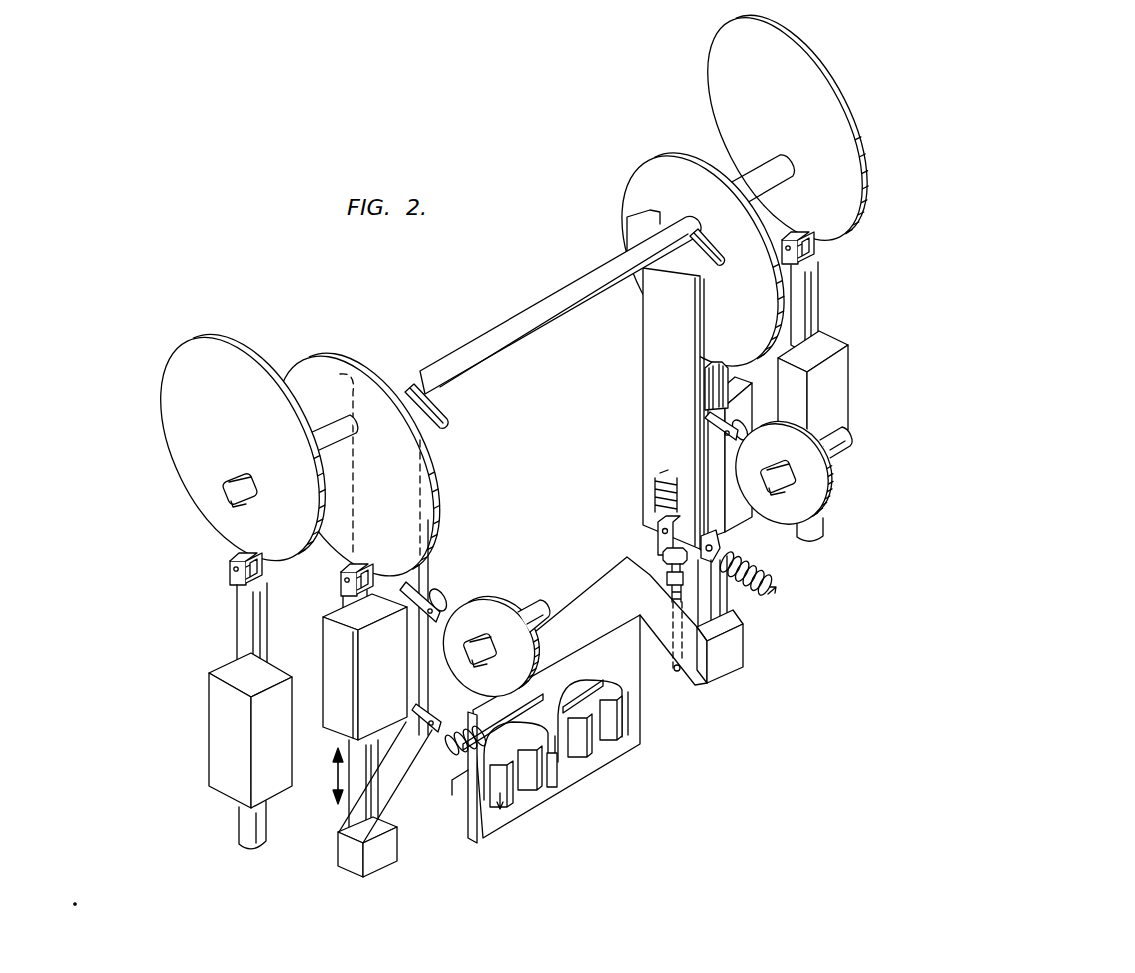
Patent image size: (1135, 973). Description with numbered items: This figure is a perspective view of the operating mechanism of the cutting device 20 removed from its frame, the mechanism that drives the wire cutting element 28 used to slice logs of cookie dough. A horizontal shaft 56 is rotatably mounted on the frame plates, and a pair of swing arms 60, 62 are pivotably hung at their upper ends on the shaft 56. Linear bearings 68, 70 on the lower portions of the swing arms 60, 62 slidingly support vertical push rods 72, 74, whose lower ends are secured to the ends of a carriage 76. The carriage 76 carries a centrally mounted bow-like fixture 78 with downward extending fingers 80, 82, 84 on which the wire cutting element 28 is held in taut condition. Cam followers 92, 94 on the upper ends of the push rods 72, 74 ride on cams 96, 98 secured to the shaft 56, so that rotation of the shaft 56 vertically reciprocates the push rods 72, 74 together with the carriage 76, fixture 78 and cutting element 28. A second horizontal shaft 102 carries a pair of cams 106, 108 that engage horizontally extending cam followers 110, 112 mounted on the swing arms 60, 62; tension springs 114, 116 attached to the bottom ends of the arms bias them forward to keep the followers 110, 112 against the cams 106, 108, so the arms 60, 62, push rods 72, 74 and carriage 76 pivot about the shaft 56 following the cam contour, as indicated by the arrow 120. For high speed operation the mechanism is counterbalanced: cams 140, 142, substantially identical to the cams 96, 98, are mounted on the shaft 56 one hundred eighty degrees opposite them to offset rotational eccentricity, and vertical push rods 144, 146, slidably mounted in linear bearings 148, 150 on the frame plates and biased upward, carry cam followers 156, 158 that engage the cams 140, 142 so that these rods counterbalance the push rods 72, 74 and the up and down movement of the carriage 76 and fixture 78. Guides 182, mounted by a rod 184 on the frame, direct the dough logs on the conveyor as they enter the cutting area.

The cutting device 20 is at (198, 302).
The wire cutting element 28 is at (590, 770).
The horizontal shaft 56 is at (485, 333).
The swing arm 60 is at (416, 572).
The swing arm 62 is at (655, 350).
The linear bearing 68 is at (335, 640).
The linear bearing 70 is at (733, 510).
The vertical push rod 72 is at (352, 805).
The vertical push rod 74 is at (728, 618).
The carriage 76 is at (600, 590).
The bow-like fixture 78 is at (647, 678).
The finger 80 is at (478, 838).
The finger 82 is at (570, 783).
The finger 84 is at (645, 728).
The cam follower 92 is at (342, 582).
The cam follower 94 is at (705, 388).
The cam 96 is at (335, 370).
The cam 98 is at (688, 150).
The horizontal shaft 102 is at (525, 612).
The cam 106 is at (500, 688).
The cam 108 is at (815, 490).
The cam follower 110 is at (440, 596).
The cam follower 112 is at (706, 428).
The tension spring 114 is at (456, 748).
The tension spring 116 is at (772, 578).
The arrow 120 is at (368, 913).
The cam 140 is at (178, 455).
The cam 142 is at (820, 100).
The vertical push rod 144 is at (237, 625).
The vertical push rod 146 is at (820, 312).
The linear bearing 148 is at (214, 705).
The linear bearing 150 is at (845, 378).
The cam follower 156 is at (231, 570).
The cam follower 158 is at (822, 258).
The guide 182 is at (515, 805).
The rod 184 is at (605, 690).